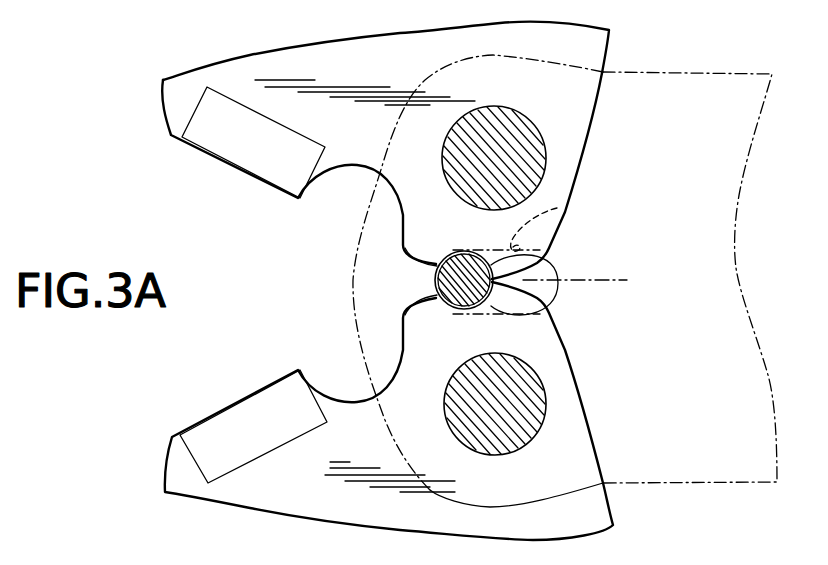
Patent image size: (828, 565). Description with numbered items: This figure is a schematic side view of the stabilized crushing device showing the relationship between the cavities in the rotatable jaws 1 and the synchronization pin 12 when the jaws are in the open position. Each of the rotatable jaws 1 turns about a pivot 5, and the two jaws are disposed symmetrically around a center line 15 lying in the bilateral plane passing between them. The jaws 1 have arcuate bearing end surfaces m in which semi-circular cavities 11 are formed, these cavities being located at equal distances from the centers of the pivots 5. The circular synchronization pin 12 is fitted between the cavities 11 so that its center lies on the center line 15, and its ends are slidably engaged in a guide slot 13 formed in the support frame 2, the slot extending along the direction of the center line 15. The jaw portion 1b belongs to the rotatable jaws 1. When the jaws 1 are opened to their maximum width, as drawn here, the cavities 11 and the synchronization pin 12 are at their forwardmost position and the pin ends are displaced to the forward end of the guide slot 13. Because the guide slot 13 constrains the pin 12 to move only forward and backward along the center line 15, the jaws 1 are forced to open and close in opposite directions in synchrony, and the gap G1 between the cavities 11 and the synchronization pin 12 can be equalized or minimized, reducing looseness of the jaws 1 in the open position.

The rotatable jaws 1 is at (318, 45).
The jaw portion of body 1b is at (573, 170).
The support frame 2 is at (690, 73).
The pivots 5 is at (543, 152).
The gap G1 is at (423, 278).
The cavities 11 is at (438, 240).
The bearing end surfaces m is at (400, 253).
The synchronization pin 12 is at (548, 312).
The guide slot 13 is at (557, 210).
The center line 15 is at (593, 281).